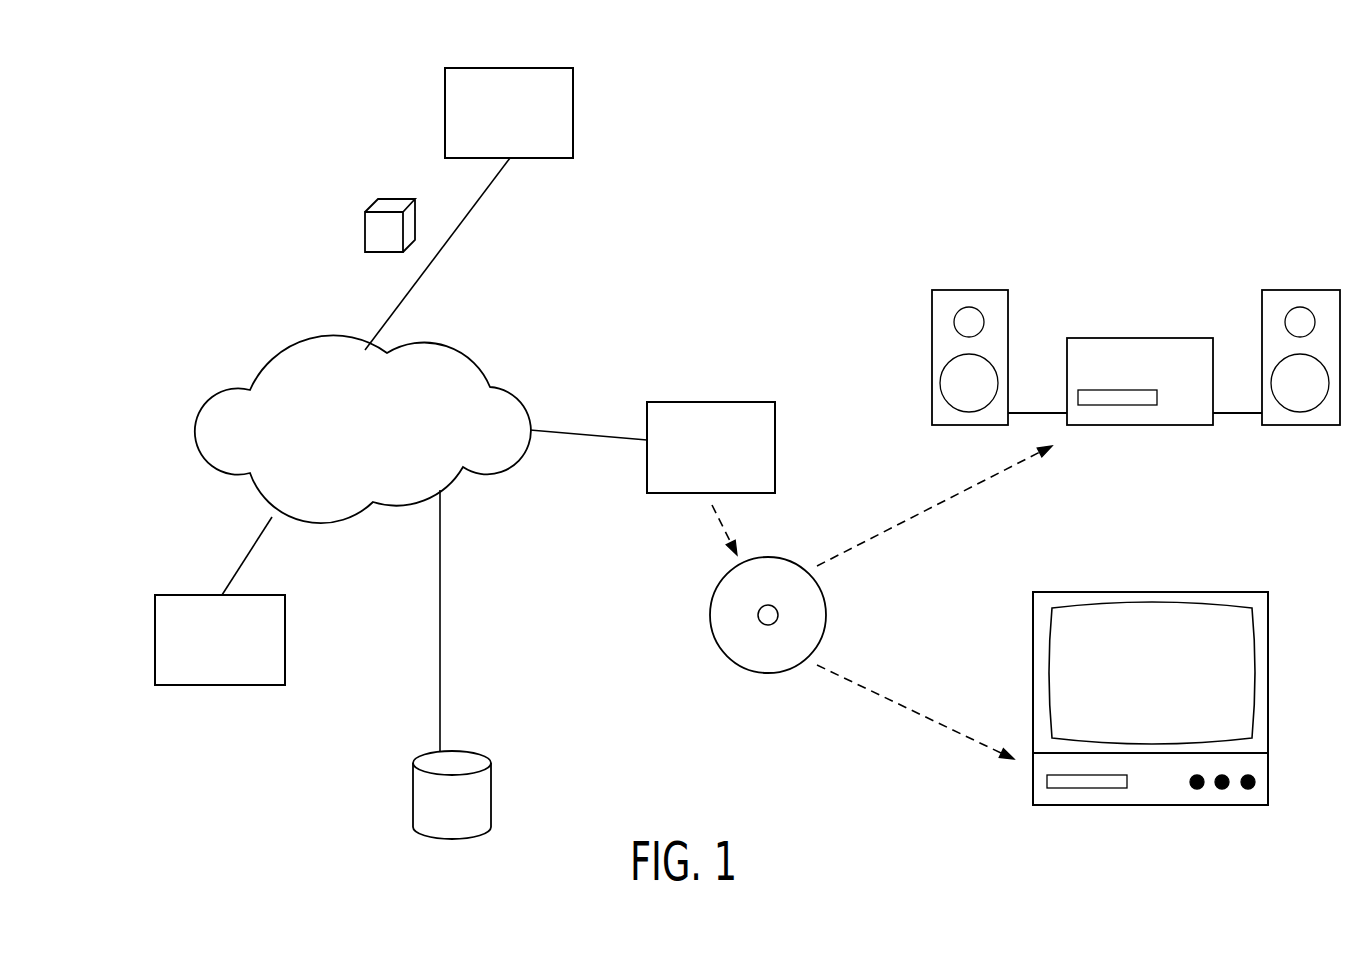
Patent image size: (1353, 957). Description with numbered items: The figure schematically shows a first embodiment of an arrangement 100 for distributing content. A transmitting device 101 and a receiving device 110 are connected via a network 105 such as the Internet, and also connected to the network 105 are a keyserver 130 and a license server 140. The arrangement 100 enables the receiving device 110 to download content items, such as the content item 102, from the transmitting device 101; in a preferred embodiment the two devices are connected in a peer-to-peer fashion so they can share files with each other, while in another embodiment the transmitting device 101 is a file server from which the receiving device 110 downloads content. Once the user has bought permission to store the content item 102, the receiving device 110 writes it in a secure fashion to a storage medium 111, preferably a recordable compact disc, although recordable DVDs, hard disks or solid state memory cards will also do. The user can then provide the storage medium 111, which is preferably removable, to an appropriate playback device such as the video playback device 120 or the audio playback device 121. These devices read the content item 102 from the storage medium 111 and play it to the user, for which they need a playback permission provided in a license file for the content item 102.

The arrangement 100 is at (878, 97).
The transmitting device 101 is at (443, 122).
The content item 102 is at (366, 237).
The network 105 is at (194, 427).
The receiving device 110 is at (648, 415).
The storage medium 111 is at (762, 672).
The video playback device 120 is at (1033, 685).
The audio playback device 121 is at (1142, 428).
The keyserver 130 is at (412, 797).
The license server 140 is at (155, 645).